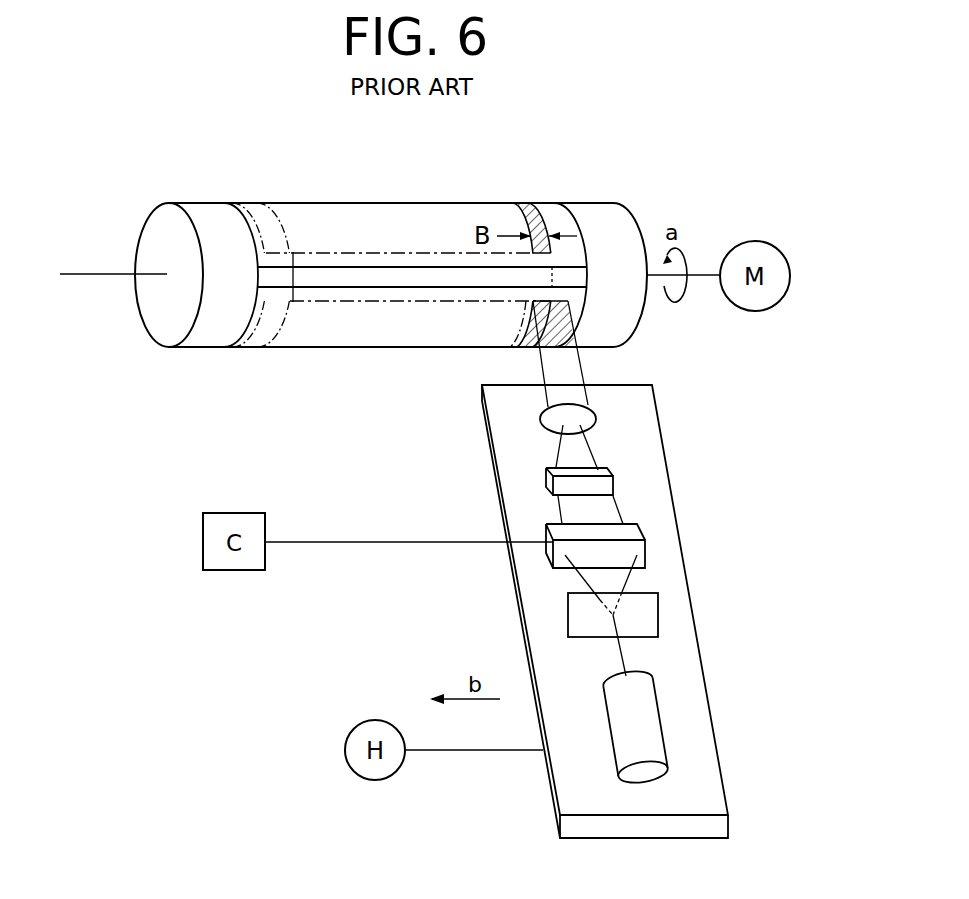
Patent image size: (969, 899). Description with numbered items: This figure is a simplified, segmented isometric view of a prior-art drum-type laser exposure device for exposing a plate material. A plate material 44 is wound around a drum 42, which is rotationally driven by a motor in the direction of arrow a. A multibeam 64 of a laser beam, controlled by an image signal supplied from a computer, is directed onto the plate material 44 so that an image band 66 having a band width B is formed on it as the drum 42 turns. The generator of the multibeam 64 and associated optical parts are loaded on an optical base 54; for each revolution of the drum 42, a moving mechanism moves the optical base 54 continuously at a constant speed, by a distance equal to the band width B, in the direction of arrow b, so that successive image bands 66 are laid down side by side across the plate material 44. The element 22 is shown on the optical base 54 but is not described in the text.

The drum 42 is at (612, 224).
The plate material 44 is at (556, 221).
The image band 66 is at (531, 219).
The multibeam 64 is at (598, 419).
The photodetector 22 is at (647, 727).
The optical base 54 is at (707, 788).